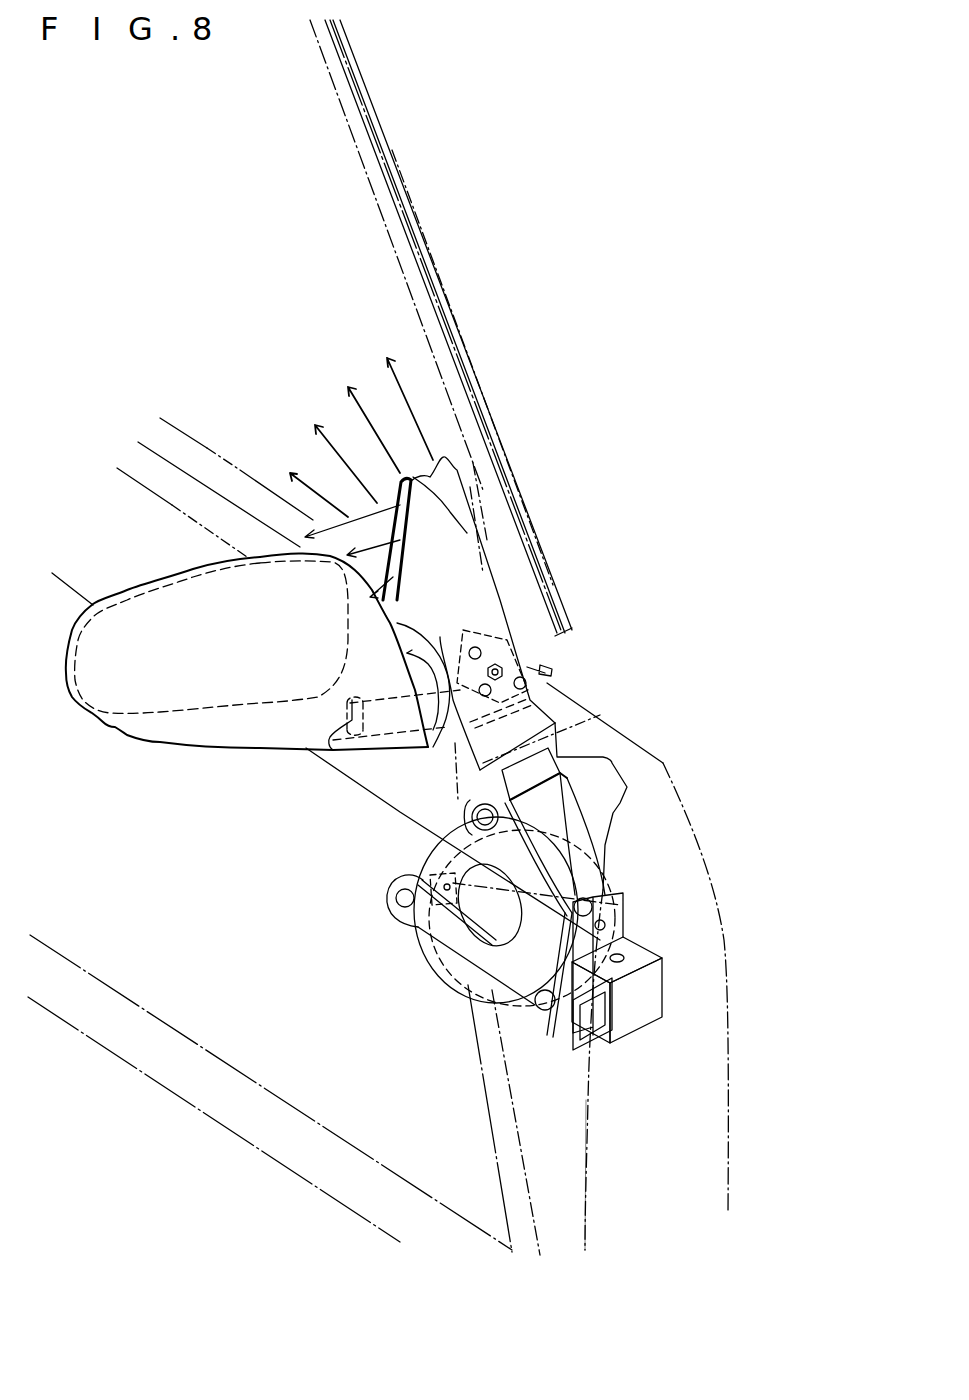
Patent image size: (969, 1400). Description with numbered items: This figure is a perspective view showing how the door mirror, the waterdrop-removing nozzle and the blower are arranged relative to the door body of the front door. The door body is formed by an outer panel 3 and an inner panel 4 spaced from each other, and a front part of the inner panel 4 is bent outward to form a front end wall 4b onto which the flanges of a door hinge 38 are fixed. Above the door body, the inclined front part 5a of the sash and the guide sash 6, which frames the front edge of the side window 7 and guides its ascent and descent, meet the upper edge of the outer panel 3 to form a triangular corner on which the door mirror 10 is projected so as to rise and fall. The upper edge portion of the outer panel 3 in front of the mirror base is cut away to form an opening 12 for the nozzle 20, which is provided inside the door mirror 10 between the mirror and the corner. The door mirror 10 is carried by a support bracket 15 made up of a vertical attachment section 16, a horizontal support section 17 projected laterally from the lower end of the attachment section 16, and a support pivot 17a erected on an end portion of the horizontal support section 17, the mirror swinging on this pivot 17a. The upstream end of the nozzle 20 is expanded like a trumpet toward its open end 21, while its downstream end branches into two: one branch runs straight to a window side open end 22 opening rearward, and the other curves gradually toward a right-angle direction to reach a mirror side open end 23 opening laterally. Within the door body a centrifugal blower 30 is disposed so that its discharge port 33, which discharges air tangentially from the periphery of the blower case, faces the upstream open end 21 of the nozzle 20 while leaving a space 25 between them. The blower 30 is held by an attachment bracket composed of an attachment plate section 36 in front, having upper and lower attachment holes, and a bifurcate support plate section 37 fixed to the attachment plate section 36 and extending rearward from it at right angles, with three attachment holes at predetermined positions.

The outer panel 3 is at (177, 1003).
The inner panel 4 is at (723, 967).
The front end wall 4b is at (660, 1126).
The inclined front part of the sash 5a is at (378, 140).
The guide sash 6 is at (473, 1060).
The side window 7 is at (360, 300).
The door mirror 10 is at (105, 730).
The opening 12 is at (510, 740).
The support bracket 15 is at (495, 772).
The attachment section 16 is at (548, 668).
The horizontal support section 17 is at (382, 750).
The support pivot 17a is at (323, 747).
The nozzle 20 is at (507, 578).
The upper stream side open end 21 is at (565, 746).
The window side open end 22 is at (433, 472).
The mirror side open end 23 is at (400, 540).
The space 25 is at (452, 873).
The blower 30 is at (577, 861).
The discharge port 33 is at (610, 757).
The attachment plate section 36 is at (563, 1033).
The support plate section 37 is at (520, 948).
The door hinge 38 is at (670, 997).